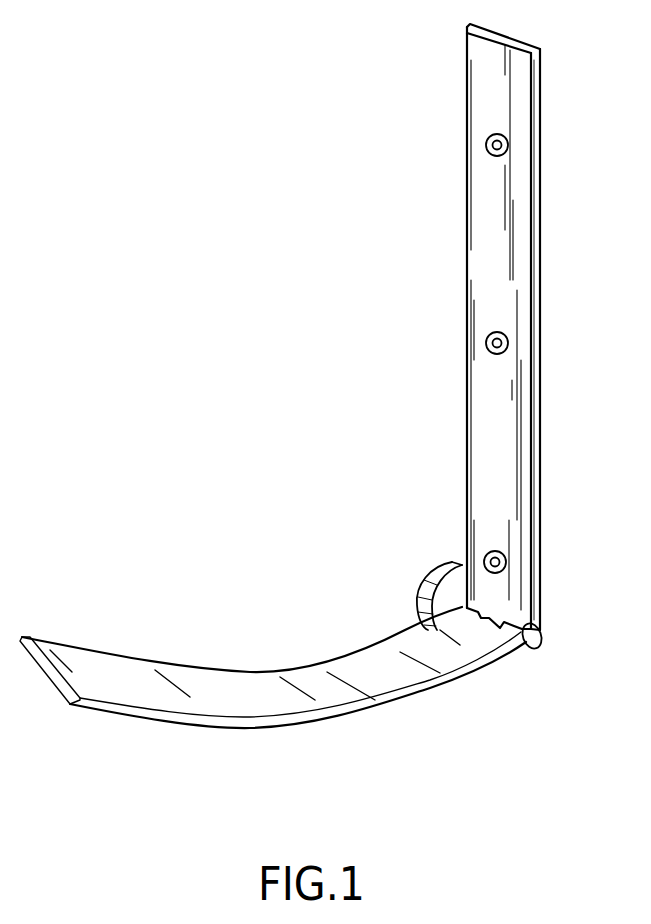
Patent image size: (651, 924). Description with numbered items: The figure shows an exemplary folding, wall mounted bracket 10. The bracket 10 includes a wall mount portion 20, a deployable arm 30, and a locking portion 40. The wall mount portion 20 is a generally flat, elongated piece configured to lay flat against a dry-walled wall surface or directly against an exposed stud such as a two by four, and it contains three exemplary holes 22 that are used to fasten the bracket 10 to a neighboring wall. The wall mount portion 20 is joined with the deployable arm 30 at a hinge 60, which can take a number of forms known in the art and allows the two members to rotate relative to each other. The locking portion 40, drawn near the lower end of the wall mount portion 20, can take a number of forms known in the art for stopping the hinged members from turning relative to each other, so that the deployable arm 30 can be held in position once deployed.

The bracket 10 is at (544, 55).
The wall mount portion 20 is at (542, 305).
The holes 22 is at (495, 157).
The deployable arm 30 is at (245, 731).
The locking portion 40 is at (430, 572).
The hinge 60 is at (514, 650).